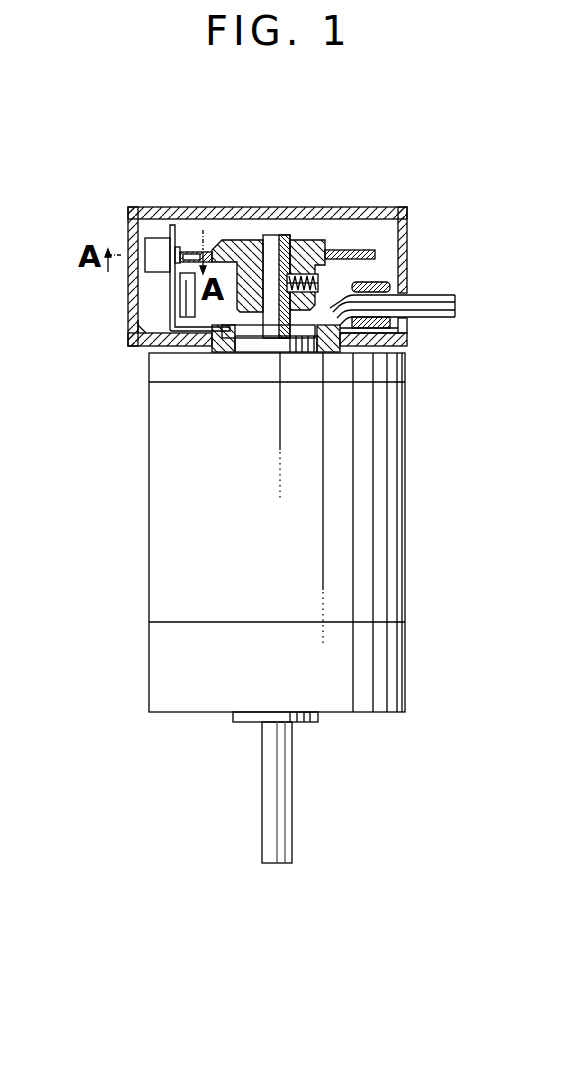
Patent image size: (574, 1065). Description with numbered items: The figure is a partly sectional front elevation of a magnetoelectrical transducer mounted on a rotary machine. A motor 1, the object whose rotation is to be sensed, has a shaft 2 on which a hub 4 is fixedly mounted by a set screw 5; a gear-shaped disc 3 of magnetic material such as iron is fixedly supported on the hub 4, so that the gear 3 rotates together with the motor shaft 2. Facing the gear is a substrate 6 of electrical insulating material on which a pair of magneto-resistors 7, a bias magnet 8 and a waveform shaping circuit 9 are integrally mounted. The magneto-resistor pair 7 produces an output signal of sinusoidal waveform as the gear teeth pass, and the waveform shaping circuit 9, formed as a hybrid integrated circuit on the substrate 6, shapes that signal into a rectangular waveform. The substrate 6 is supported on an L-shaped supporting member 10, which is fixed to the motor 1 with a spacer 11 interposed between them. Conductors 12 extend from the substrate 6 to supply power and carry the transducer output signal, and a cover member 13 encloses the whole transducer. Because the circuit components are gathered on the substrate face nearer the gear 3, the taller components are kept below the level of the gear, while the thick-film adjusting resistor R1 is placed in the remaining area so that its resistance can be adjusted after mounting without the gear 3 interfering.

The motor 1 is at (148, 445).
The shaft 2 is at (282, 235).
The gear-shaped disc 3 is at (363, 250).
The hub 4 is at (340, 240).
The set screw 5 is at (320, 279).
The substrate 6 is at (172, 225).
The magneto-resistor pair 7 is at (180, 258).
The bias magnet 8 is at (153, 238).
The waveform shaping circuit 9 is at (203, 250).
The L-shaped supporting member 10 is at (165, 320).
The spacer 11 is at (407, 344).
The conductors 12 is at (447, 318).
The cover member 13 is at (406, 214).
The thick-film adjusting resistor R1 is at (165, 285).